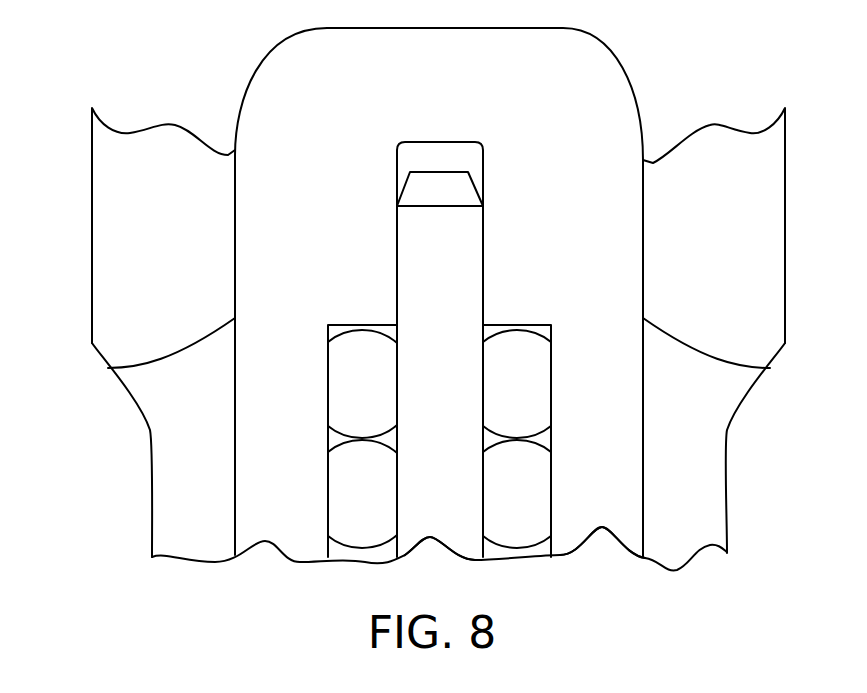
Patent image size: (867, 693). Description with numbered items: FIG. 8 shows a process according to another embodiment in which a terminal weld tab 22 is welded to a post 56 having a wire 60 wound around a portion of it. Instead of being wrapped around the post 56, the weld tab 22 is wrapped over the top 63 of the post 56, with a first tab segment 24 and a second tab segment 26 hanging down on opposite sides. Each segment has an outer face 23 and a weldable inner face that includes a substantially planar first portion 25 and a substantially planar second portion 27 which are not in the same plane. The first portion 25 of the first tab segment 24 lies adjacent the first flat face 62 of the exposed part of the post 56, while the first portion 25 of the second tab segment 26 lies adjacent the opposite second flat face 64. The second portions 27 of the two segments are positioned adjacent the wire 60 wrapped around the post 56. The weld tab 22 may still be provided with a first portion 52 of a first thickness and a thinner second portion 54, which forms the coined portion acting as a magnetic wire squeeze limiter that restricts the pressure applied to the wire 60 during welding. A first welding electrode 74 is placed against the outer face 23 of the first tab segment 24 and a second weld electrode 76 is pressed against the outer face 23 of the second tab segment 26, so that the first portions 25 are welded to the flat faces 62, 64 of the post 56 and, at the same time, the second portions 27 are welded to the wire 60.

The terminal weld tab 22 is at (617, 52).
The outer face 23 is at (125, 368).
The first tab segment 24 is at (273, 548).
The substantially planar first portion 25 is at (398, 247).
The second tab segment 26 is at (597, 533).
The substantially planar second portion 27 is at (333, 439).
The first portion 52 is at (278, 98).
The second portion 54 is at (257, 480).
The post 56 is at (427, 523).
The wire 60 is at (343, 515).
The first flat face 62 is at (397, 226).
The top 63 is at (440, 172).
The second flat face 64 is at (483, 285).
The first welding electrode 74 is at (180, 482).
The second weld electrode 76 is at (682, 475).